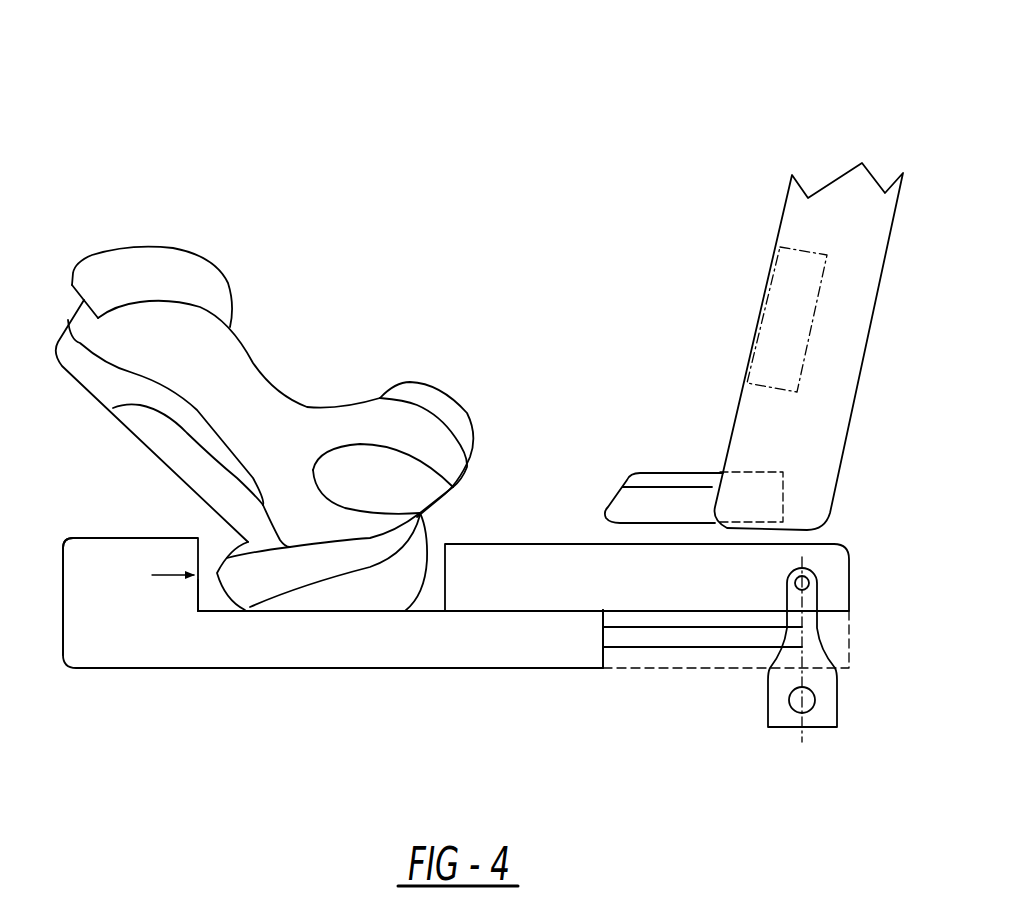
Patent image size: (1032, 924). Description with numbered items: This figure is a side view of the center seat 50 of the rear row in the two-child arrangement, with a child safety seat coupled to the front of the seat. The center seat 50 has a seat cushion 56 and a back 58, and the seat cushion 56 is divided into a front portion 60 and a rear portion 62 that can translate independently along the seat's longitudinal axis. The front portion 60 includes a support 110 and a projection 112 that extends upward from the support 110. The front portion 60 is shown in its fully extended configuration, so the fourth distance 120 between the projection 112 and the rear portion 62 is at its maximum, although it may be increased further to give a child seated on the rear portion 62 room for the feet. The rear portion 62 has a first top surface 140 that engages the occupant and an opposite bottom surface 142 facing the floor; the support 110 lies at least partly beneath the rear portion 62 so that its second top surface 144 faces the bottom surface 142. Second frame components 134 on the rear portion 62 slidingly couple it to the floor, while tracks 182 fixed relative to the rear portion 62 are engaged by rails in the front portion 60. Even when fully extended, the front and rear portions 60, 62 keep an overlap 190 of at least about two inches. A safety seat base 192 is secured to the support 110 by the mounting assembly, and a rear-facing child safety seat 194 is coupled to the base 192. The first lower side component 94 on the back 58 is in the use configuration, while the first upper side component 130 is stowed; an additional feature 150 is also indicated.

The center seat 50 is at (802, 68).
The seat cushion 56 is at (112, 608).
The back 58 is at (797, 216).
The front portion 60 is at (139, 560).
The rear portion 62 is at (596, 558).
The first lower side component 94 is at (670, 498).
The support 110 is at (363, 640).
The projection 112 is at (93, 570).
The fourth distance 120 is at (450, 575).
The first upper side component 130 is at (783, 311).
The second frame components 134 is at (827, 695).
The first top surface 140 is at (553, 543).
The bottom surface 142 is at (587, 613).
The second top surface 144 is at (225, 612).
The retainer 150 is at (105, 537).
The tracks 182 is at (663, 640).
The overlap 190 is at (482, 614).
The safety seat base 192 is at (320, 588).
The child safety seat 194 is at (249, 372).